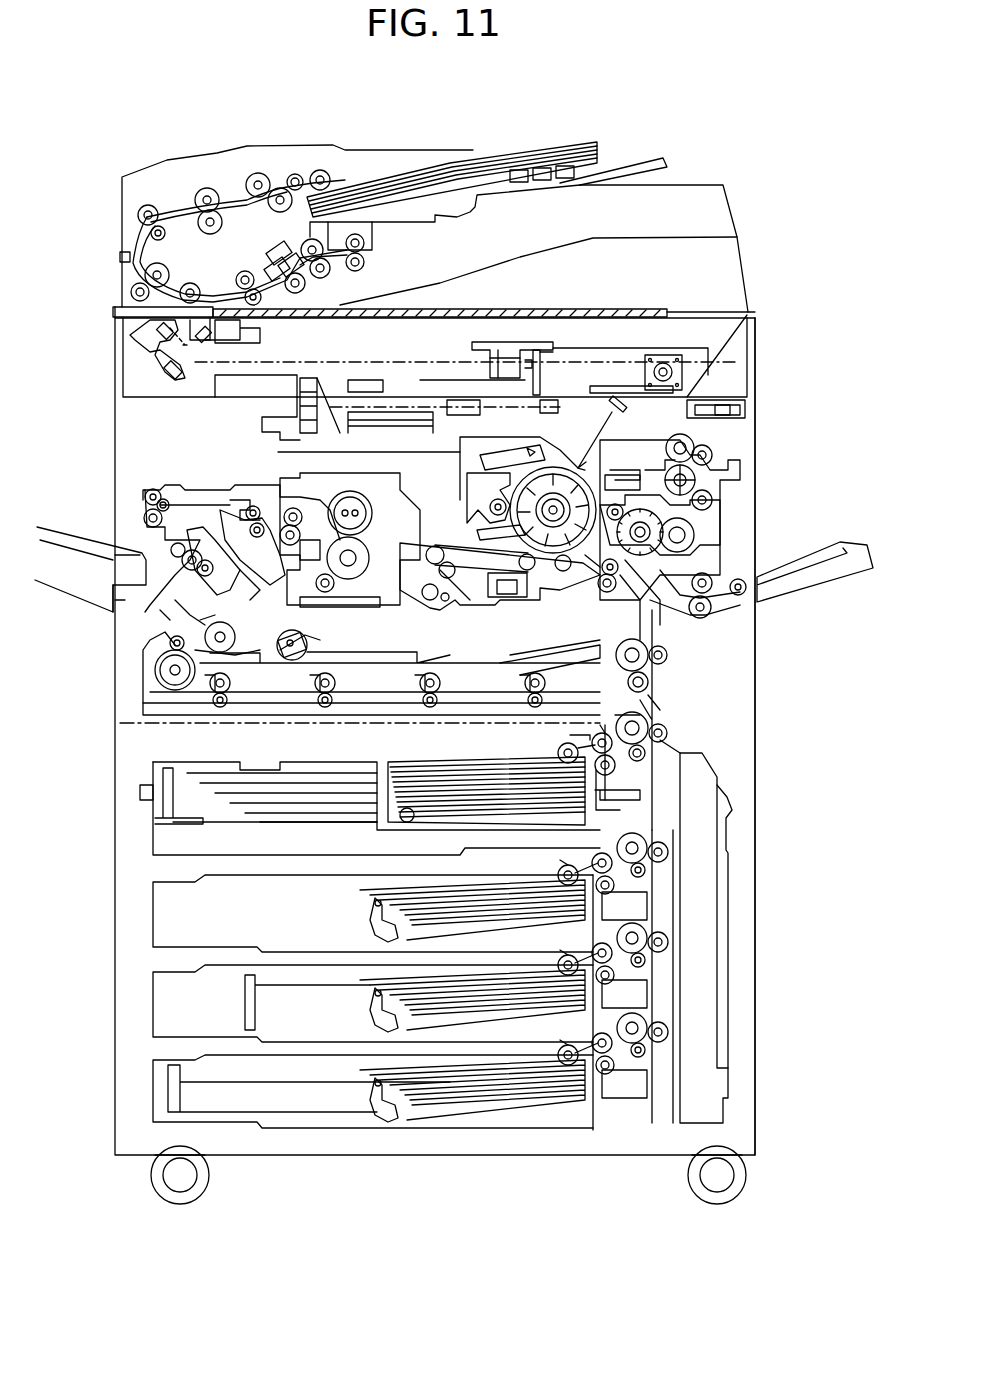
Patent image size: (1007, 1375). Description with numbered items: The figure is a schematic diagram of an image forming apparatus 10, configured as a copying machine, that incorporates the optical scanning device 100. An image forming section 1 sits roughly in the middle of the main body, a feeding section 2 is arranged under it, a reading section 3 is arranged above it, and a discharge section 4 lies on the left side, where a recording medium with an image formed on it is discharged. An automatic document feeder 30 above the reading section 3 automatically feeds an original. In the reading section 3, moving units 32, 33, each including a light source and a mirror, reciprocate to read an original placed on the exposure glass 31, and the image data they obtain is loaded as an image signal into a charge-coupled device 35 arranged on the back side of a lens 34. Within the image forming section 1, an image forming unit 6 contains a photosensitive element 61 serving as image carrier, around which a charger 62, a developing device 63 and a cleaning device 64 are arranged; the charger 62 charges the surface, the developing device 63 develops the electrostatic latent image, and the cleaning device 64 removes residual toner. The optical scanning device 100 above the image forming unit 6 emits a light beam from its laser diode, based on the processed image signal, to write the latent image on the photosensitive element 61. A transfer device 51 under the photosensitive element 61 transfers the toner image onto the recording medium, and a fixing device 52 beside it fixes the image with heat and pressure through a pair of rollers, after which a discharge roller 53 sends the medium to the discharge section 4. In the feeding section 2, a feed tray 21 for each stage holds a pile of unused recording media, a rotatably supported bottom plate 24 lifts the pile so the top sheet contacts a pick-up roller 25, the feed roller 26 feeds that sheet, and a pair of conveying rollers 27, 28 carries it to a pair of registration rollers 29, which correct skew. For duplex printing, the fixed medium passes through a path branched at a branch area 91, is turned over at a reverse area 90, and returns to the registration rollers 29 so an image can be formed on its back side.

The image forming apparatus 10 is at (586, 82).
The automatic document feeder 30 is at (178, 172).
The exposure glass 31 is at (530, 310).
The reading section 3 is at (695, 320).
The moving unit 32 is at (240, 330).
The moving unit 33 is at (128, 352).
The lens 34 is at (505, 352).
The charge-coupled device 35 is at (545, 375).
The charger 62 is at (553, 452).
The optical scanning device 100 is at (277, 433).
The branch area 91 is at (205, 490).
The fixing device 52 is at (300, 478).
The discharge roller 53 is at (140, 517).
The photosensitive element 61 is at (537, 483).
The cleaning device 64 is at (475, 508).
The image forming unit 6 is at (725, 470).
The image forming section 1 is at (748, 502).
The developing device 63 is at (700, 537).
The discharge section 4 is at (88, 590).
The transfer device 51 is at (478, 570).
The registration rollers 29 is at (613, 592).
The conveying roller 28 is at (672, 656).
The reverse area 90 is at (143, 697).
The conveying roller 27 is at (672, 732).
The bottom plate 24 is at (445, 772).
The pick-up roller 25 is at (560, 752).
The feed roller 26 is at (612, 778).
The feeding section 2 is at (135, 814).
The feed tray 21 is at (170, 845).